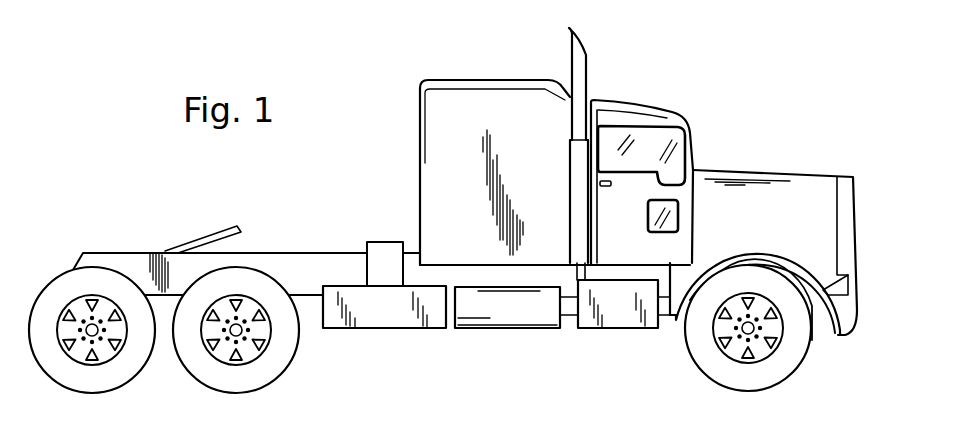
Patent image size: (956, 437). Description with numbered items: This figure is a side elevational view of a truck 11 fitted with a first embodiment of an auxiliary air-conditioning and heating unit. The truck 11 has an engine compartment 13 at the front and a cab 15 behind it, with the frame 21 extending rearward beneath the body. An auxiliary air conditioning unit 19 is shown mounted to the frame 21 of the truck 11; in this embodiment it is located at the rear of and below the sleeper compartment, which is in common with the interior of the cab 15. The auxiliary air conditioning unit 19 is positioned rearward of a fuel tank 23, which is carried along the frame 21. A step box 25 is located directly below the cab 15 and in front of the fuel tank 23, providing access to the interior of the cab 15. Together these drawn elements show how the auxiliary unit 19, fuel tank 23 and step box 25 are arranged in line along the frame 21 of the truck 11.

The truck 11 is at (447, 215).
The engine compartment 13 is at (805, 193).
The cab 15 is at (640, 102).
The auxiliary air conditioning unit 19 is at (363, 334).
The frame 21 is at (108, 262).
The fuel tank 23 is at (518, 305).
The step box 25 is at (632, 317).